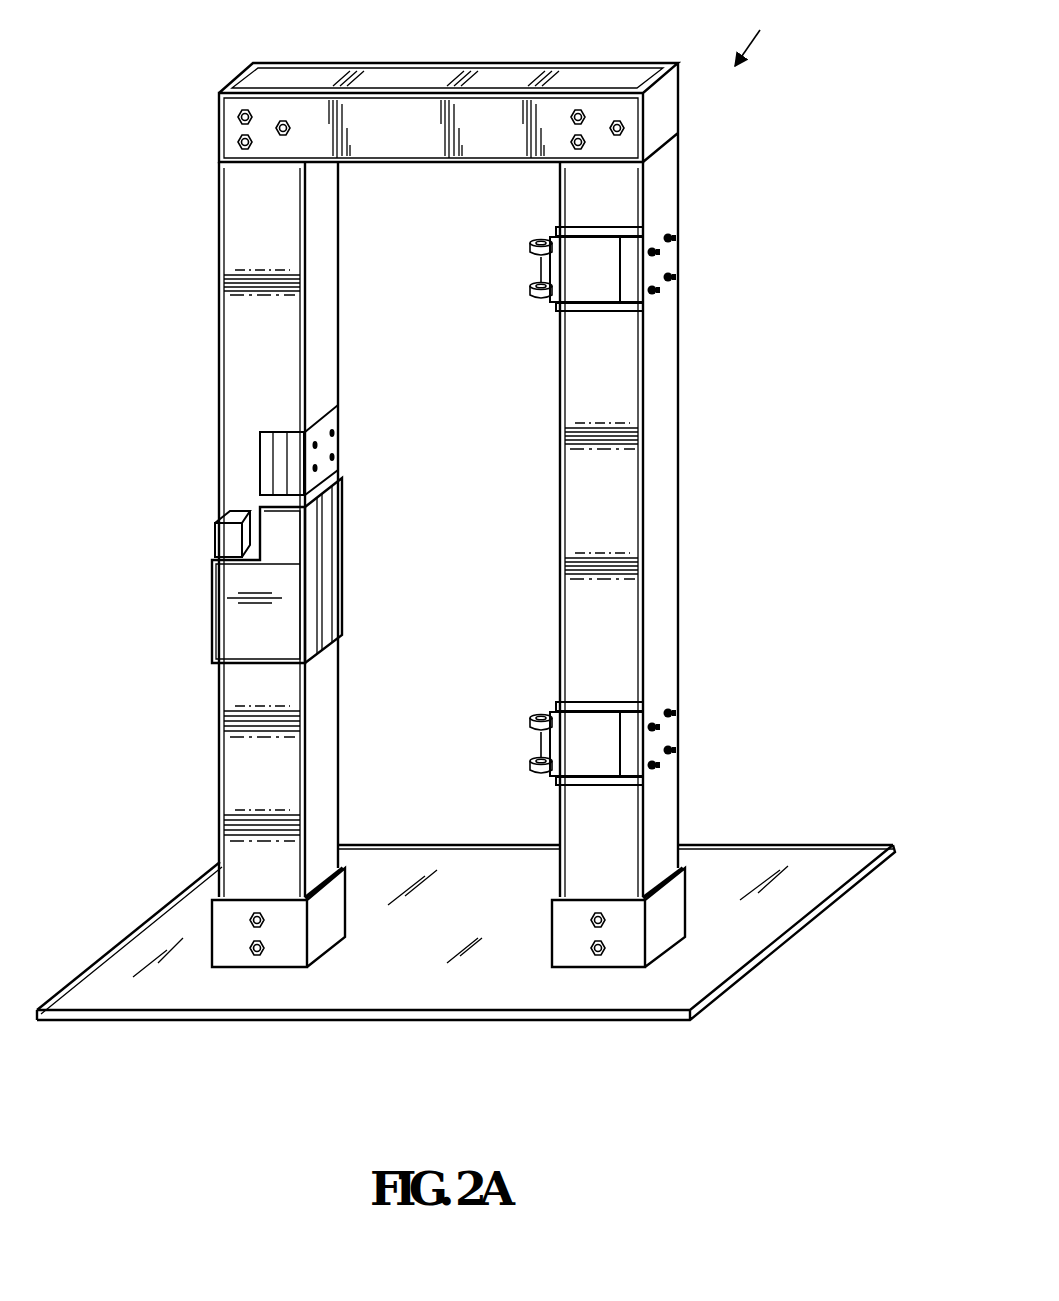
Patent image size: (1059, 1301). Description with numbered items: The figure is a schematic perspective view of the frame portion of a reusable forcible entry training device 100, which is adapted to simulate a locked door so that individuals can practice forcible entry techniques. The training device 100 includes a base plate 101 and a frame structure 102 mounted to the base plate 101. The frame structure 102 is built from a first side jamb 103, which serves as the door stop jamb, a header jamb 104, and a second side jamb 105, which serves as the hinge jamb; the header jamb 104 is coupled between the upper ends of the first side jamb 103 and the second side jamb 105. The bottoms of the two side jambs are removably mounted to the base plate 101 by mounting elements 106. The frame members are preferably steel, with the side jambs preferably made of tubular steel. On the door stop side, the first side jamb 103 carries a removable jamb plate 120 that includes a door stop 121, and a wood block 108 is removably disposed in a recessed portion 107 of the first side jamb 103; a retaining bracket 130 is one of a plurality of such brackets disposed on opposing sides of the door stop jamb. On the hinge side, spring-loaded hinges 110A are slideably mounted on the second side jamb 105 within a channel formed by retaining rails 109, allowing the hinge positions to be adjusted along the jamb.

The forcible entry training device 100 is at (783, 25).
The base plate 101 is at (712, 970).
The frame structure 102 is at (448, 480).
The first side jamb 103 is at (344, 209).
The header jamb 104 is at (431, 170).
The second side jamb 105 is at (555, 191).
The mounting elements 106 is at (323, 947).
The recessed portion 107 is at (260, 462).
The wood block 108 is at (325, 440).
The retaining rails 109 is at (590, 232).
The spring-loaded hinges 110A is at (546, 320).
The removable jamb plate 120 is at (228, 612).
The door stop 121 is at (325, 567).
The retaining bracket 130 is at (215, 538).